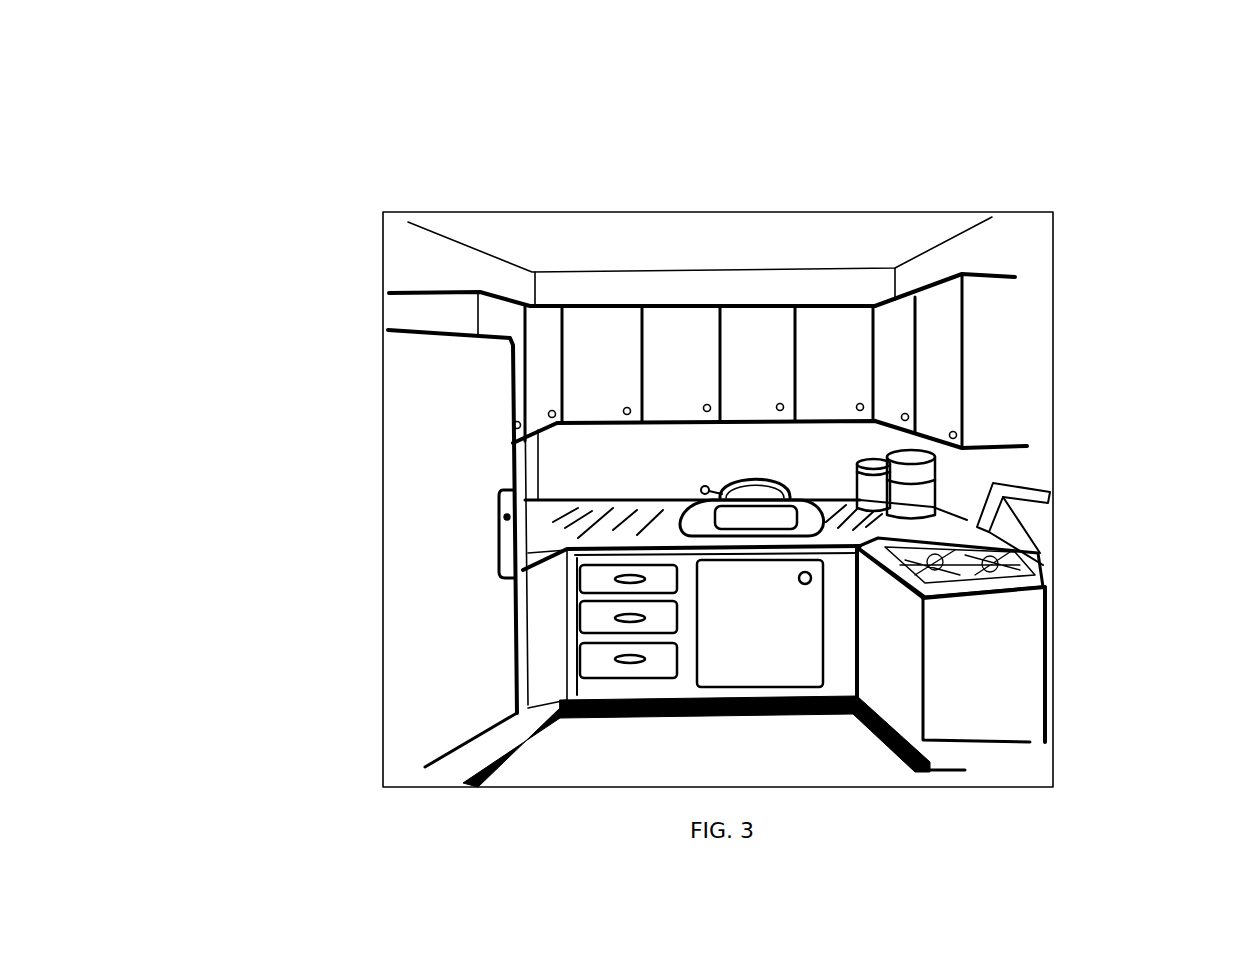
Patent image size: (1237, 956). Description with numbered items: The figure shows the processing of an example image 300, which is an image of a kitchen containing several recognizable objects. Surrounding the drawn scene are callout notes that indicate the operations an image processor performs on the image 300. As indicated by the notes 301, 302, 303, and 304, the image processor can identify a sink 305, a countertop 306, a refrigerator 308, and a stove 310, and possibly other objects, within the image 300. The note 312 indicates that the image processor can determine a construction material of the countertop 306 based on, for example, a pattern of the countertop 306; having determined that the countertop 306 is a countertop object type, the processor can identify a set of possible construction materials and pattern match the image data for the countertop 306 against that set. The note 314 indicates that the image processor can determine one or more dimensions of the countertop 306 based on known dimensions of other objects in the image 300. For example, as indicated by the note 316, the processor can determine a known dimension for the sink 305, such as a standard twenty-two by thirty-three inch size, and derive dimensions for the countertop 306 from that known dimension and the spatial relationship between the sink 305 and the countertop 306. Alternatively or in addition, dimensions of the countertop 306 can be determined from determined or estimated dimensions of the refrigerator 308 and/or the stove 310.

The image 300 is at (306, 793).
The note 301 is at (800, 503).
The note 302 is at (663, 514).
The note 303 is at (433, 590).
The note 304 is at (1015, 675).
The sink 305 is at (722, 490).
The countertop 306 is at (643, 512).
The refrigerator 308 is at (482, 383).
The stove 310 is at (985, 639).
The note 312 is at (867, 520).
The note 314 is at (596, 518).
The note 316 is at (746, 480).